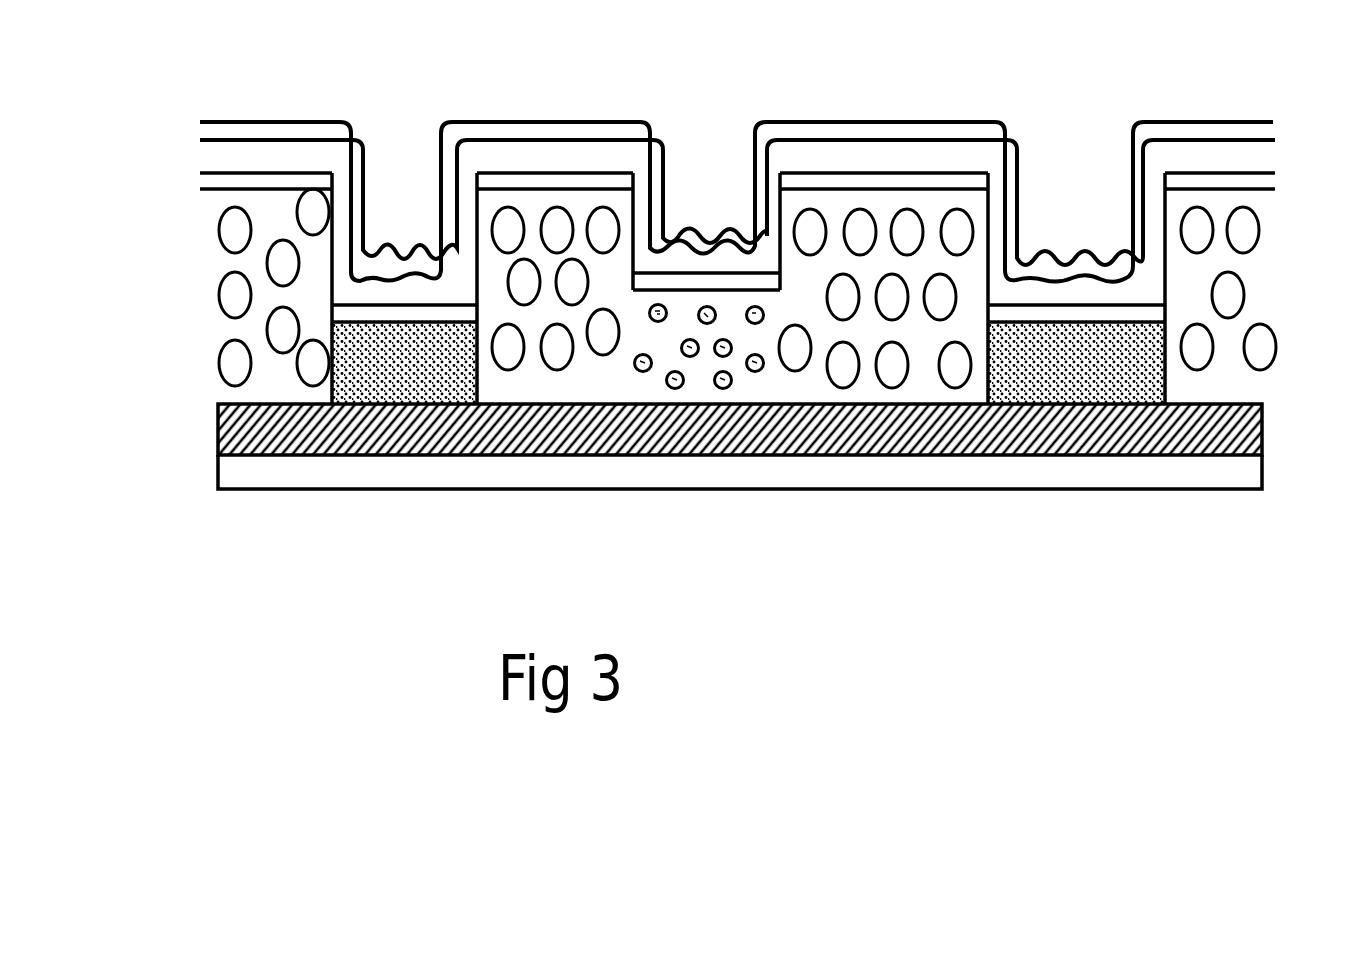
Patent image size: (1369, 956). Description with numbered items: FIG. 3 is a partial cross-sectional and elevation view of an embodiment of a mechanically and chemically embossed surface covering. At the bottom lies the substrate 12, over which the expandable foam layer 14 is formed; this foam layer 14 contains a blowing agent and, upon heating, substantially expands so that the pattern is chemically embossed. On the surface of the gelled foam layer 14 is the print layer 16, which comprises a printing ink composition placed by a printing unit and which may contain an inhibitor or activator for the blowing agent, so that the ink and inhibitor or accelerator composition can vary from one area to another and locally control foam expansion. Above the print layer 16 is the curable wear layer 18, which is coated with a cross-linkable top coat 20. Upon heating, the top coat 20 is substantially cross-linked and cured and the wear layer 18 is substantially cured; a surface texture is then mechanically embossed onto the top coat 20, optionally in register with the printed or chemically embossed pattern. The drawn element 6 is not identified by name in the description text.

The substrate 12 is at (1252, 510).
The electrode layer 6 is at (1269, 432).
The foam layer 14 is at (209, 310).
The print layer 16 is at (202, 180).
The wear layer 18 is at (1284, 157).
The top coat 20 is at (1275, 120).